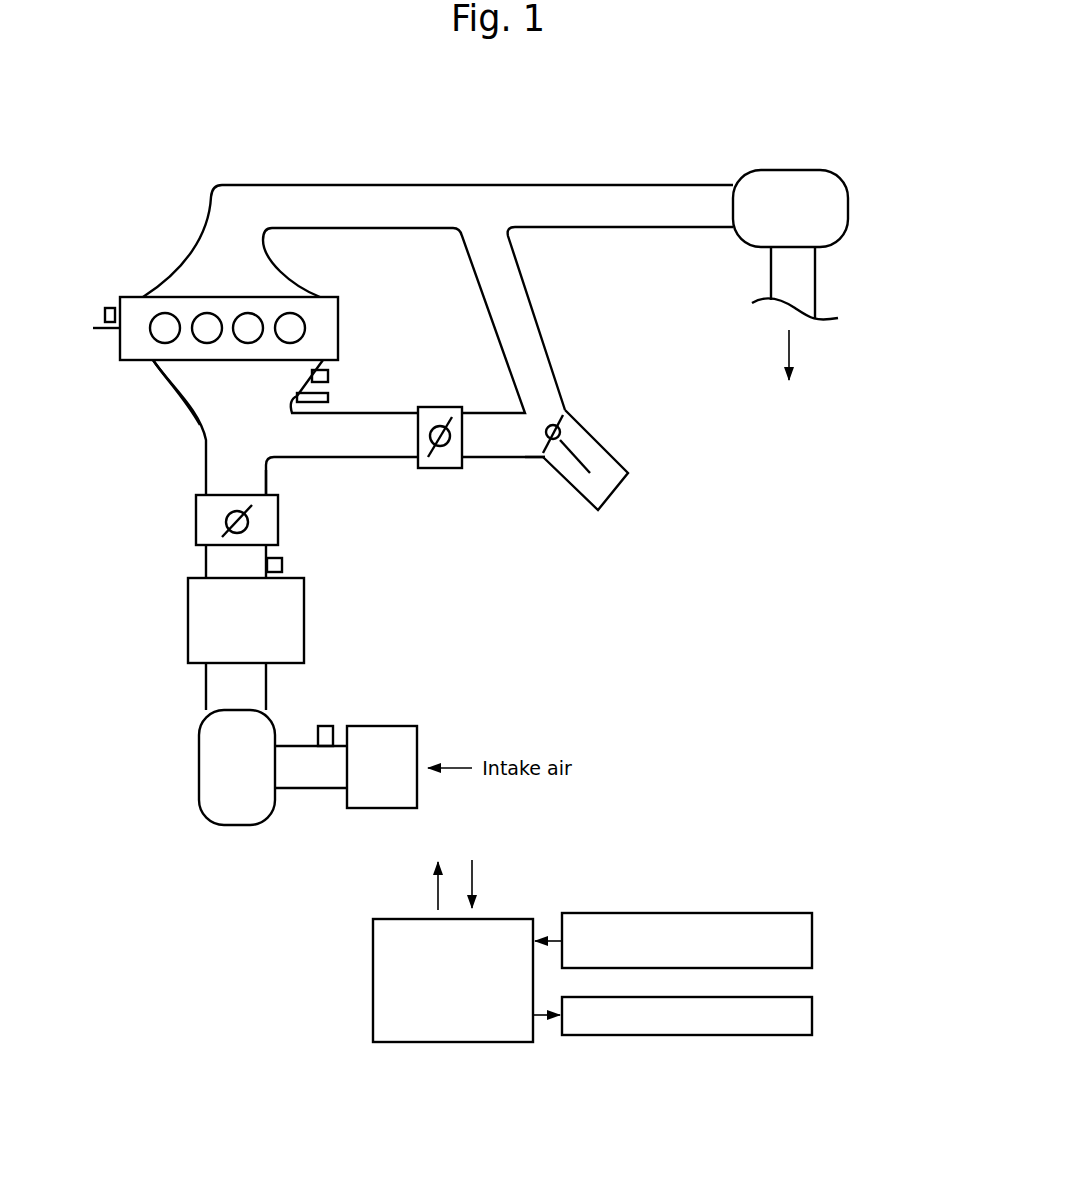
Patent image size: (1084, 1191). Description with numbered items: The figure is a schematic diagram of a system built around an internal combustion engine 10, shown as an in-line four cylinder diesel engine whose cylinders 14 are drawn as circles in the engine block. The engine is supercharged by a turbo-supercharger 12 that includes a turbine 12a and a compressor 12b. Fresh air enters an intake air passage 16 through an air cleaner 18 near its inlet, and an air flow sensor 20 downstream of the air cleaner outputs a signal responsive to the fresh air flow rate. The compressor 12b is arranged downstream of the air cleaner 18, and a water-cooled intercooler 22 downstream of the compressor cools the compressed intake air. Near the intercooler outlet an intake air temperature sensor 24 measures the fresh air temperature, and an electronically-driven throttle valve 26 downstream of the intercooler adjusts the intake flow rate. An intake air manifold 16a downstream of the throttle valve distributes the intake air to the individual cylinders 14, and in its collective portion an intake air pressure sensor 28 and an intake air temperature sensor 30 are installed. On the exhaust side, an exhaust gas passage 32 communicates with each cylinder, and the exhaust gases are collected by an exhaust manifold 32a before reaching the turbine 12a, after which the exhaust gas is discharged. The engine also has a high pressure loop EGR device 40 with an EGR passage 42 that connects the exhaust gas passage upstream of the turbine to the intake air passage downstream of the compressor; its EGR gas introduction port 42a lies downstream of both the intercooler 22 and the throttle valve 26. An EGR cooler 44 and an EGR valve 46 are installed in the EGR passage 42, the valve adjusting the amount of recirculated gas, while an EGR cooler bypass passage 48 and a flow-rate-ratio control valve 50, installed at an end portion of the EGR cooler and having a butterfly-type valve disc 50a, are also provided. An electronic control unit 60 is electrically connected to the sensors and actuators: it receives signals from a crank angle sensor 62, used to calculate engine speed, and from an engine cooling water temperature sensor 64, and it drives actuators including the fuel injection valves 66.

The internal combustion engine 10 is at (281, 343).
The turbo-supercharger 12 is at (501, 503).
The turbine 12a is at (790, 168).
The compressor 12b is at (237, 827).
The cylinder 14 is at (252, 327).
The intake air passage 16 is at (198, 693).
The intake air manifold 16a is at (247, 390).
The air cleaner 18 is at (395, 724).
The air flow sensor 20 is at (325, 725).
The intercooler 22 is at (304, 610).
The intake air temperature sensor 24 is at (282, 565).
The throttle valve 26 is at (278, 518).
The intake air pressure sensor 28 is at (328, 398).
The intake air temperature sensor 30 is at (328, 376).
The exhaust gas passage 32 is at (427, 183).
The exhaust manifold 32a is at (200, 273).
The EGR device 40 is at (580, 307).
The EGR passage 42 is at (583, 397).
The EGR gas introduction port 42a is at (278, 433).
The EGR cooler 44 is at (612, 476).
The EGR valve 46 is at (443, 407).
The EGR cooler bypass passage 48 is at (535, 433).
The flow-rate-ratio control valve 50 is at (566, 431).
The valve disc 50a is at (557, 442).
The electronic control unit 60 is at (373, 975).
The crank angle sensor 62 is at (110, 306).
The engine cooling water temperature sensor 64 is at (812, 940).
The fuel injection valve 66 is at (812, 1015).